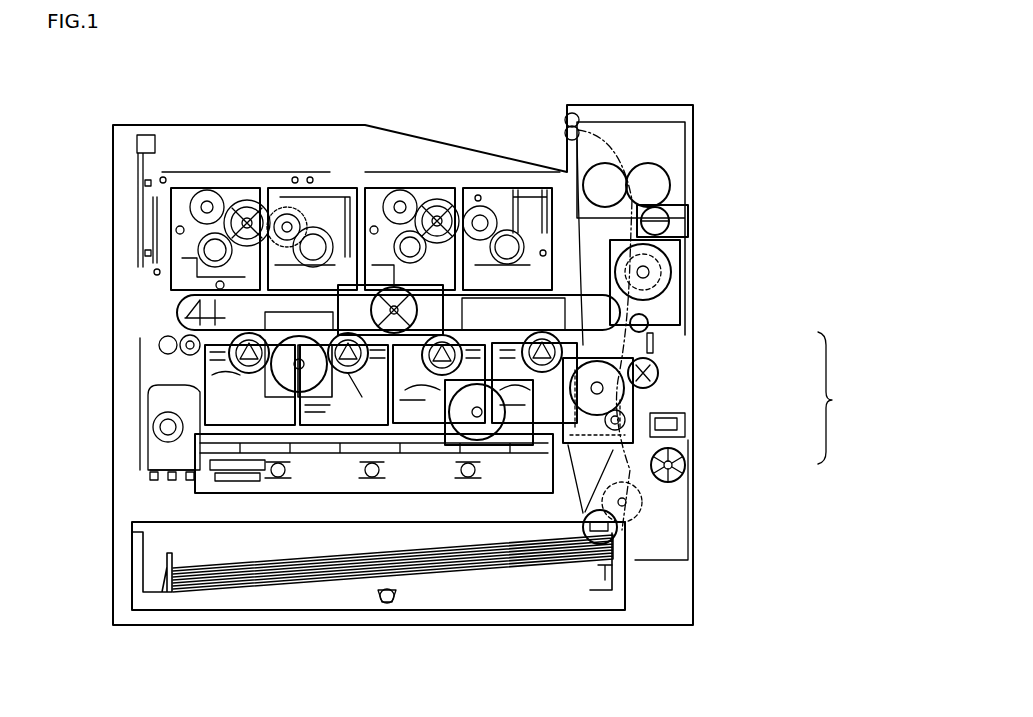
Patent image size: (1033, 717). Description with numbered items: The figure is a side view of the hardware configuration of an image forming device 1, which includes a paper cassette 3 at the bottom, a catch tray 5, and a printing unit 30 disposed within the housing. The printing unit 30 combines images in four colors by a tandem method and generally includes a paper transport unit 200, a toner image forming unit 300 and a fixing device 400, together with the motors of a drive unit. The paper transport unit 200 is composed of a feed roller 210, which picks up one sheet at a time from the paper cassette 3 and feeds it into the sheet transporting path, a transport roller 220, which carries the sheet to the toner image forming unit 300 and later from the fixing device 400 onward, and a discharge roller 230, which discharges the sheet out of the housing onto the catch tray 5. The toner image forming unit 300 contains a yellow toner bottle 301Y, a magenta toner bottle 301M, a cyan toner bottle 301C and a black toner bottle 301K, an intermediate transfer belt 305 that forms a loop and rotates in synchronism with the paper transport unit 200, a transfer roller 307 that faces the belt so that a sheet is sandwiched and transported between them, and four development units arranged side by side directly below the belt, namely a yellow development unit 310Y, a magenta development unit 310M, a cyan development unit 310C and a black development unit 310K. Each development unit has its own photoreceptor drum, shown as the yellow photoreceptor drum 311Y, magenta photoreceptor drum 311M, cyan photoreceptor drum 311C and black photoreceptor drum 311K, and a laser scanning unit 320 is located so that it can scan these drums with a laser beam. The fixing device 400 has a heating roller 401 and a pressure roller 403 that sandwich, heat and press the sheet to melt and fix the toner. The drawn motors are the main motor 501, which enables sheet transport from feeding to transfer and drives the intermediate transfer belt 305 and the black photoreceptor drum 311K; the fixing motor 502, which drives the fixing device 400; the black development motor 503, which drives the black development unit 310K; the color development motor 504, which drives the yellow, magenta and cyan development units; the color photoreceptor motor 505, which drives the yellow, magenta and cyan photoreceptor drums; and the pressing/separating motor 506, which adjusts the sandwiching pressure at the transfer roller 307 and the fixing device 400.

The image forming device 1 is at (110, 188).
The paper cassette 3 is at (172, 613).
The catch tray 5 is at (466, 149).
The printing unit 30 is at (127, 502).
The paper transport unit 200 is at (844, 398).
The feed roller 210 is at (616, 518).
The transport roller 220 is at (684, 458).
The discharge roller 230 is at (655, 342).
The toner image forming unit 300 is at (165, 303).
The yellow toner bottle 301Y is at (208, 188).
The magenta toner bottle 301M is at (288, 188).
The cyan toner bottle 301C is at (405, 188).
The black toner bottle 301K is at (510, 188).
The intermediate transfer belt 305 is at (180, 316).
The transfer roller 307 is at (649, 320).
The yellow development unit 310Y is at (180, 372).
The magenta development unit 310M is at (336, 425).
The cyan development unit 310C is at (428, 346).
The black development unit 310K is at (556, 424).
The yellow photoreceptor drum 311Y is at (250, 379).
The magenta photoreceptor drum 311M is at (344, 379).
The cyan photoreceptor drum 311C is at (439, 379).
The black photoreceptor drum 311K is at (530, 335).
The laser scanning unit 320 is at (196, 456).
The fixing device 400 is at (693, 135).
The heating roller 401 is at (612, 165).
The pressure roller 403 is at (670, 196).
The main motor 501 is at (648, 362).
The fixing motor 502 is at (680, 266).
The black development motor 503 is at (478, 440).
The color development motor 504 is at (281, 345).
The color photoreceptor motor 505 is at (340, 285).
The pressing/separating motor 506 is at (689, 224).